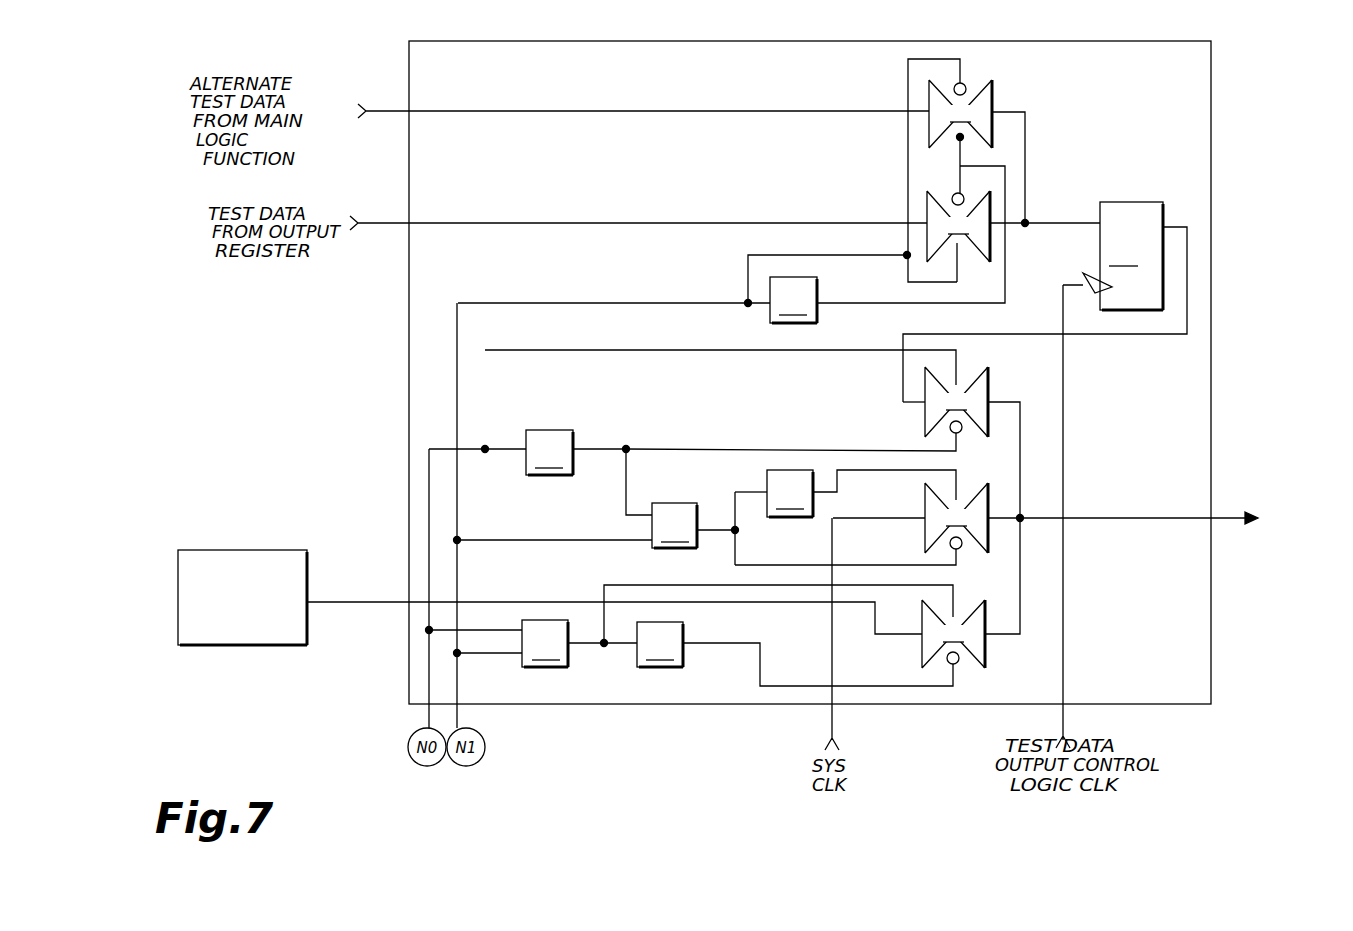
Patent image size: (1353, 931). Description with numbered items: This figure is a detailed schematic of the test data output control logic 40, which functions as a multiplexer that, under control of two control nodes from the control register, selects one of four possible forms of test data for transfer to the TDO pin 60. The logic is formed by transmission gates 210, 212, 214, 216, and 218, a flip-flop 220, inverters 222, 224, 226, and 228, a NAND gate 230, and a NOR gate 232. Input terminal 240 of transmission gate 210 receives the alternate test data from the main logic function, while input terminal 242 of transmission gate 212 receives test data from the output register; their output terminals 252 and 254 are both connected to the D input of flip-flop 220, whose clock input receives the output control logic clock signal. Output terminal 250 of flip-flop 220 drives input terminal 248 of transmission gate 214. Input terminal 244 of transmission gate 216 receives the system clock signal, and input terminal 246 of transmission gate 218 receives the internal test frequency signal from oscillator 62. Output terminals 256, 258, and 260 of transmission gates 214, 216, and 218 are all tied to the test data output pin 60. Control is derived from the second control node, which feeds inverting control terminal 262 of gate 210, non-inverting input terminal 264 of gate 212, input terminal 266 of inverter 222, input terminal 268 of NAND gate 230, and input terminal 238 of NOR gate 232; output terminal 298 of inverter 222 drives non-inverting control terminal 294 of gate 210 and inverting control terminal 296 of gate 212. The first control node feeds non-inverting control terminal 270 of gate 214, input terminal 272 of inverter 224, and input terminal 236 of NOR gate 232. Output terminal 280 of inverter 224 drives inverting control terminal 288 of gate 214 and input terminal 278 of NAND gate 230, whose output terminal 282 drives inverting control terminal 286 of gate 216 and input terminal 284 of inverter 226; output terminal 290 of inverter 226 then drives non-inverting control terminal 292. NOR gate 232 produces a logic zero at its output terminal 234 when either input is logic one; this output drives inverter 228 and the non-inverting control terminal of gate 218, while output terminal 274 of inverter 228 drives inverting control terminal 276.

The test data output control logic 40 is at (642, 706).
The TDO pin 60 is at (1232, 516).
The oscillator 62 is at (247, 648).
The transmission gate 210 is at (960, 114).
The transmission gate 212 is at (958, 226).
The transmission gate 214 is at (956, 402).
The transmission gate 216 is at (956, 518).
The transmission gate 218 is at (953, 634).
The flip-flop 220 is at (1113, 256).
The inverter 222 is at (793, 300).
The inverter 224 is at (549, 452).
The inverter 226 is at (790, 493).
The inverter 228 is at (660, 644).
The NAND gate 230 is at (674, 525).
The NOR gate 232 is at (545, 643).
The output terminal 234 is at (572, 641).
The input terminal 236 is at (520, 632).
The input terminal 238 is at (520, 657).
The input terminal 240 is at (929, 112).
The input terminal 242 is at (927, 223).
The input terminal 244 is at (925, 520).
The input terminal 246 is at (922, 636).
The input terminal 248 is at (925, 405).
The output terminal 250 is at (1164, 227).
The output terminal 252 is at (993, 112).
The output terminal 254 is at (995, 226).
The output terminal 256 is at (989, 402).
The output terminal 258 is at (988, 517).
The output terminal 260 is at (985, 634).
The inverting control terminal 262 is at (966, 84).
The non-inverting input terminal 264 is at (957, 247).
The input terminal 266 is at (766, 304).
The input terminal 268 is at (630, 542).
The non-inverting control terminal 270 is at (960, 363).
The input terminal 272 is at (507, 450).
The output terminal 274 is at (687, 646).
The inverting control terminal 276 is at (958, 662).
The input terminal 278 is at (635, 513).
The output terminal 280 is at (575, 440).
The output terminal 282 is at (700, 523).
The input terminal 284 is at (747, 492).
The inverting control terminal 286 is at (961, 547).
The inverting control terminal 288 is at (961, 431).
The output terminal 290 is at (826, 494).
The non-inverting control terminal 292 is at (960, 477).
The non-inverting control terminal 294 is at (955, 142).
The inverting control terminal 296 is at (953, 195).
The output terminal 298 is at (911, 248).